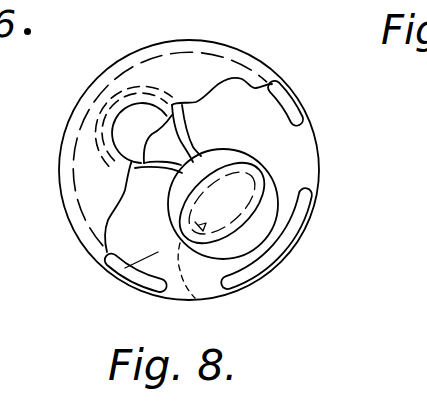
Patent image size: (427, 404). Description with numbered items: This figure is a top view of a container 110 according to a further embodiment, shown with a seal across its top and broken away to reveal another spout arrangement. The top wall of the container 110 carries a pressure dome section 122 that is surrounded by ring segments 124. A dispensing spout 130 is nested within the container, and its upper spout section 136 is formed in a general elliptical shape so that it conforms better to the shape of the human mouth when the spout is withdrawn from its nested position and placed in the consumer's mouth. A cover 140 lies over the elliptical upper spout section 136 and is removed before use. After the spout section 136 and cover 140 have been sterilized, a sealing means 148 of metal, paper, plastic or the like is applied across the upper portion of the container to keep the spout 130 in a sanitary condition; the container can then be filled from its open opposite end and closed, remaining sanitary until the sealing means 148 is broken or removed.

The container 110 is at (63, 215).
The pressure dome section 122 is at (124, 283).
The ring segments 124 is at (296, 104).
The spout 130 is at (236, 143).
The upper spout section 136 is at (206, 309).
The cover 140 is at (255, 173).
The sealing means 148 is at (182, 68).